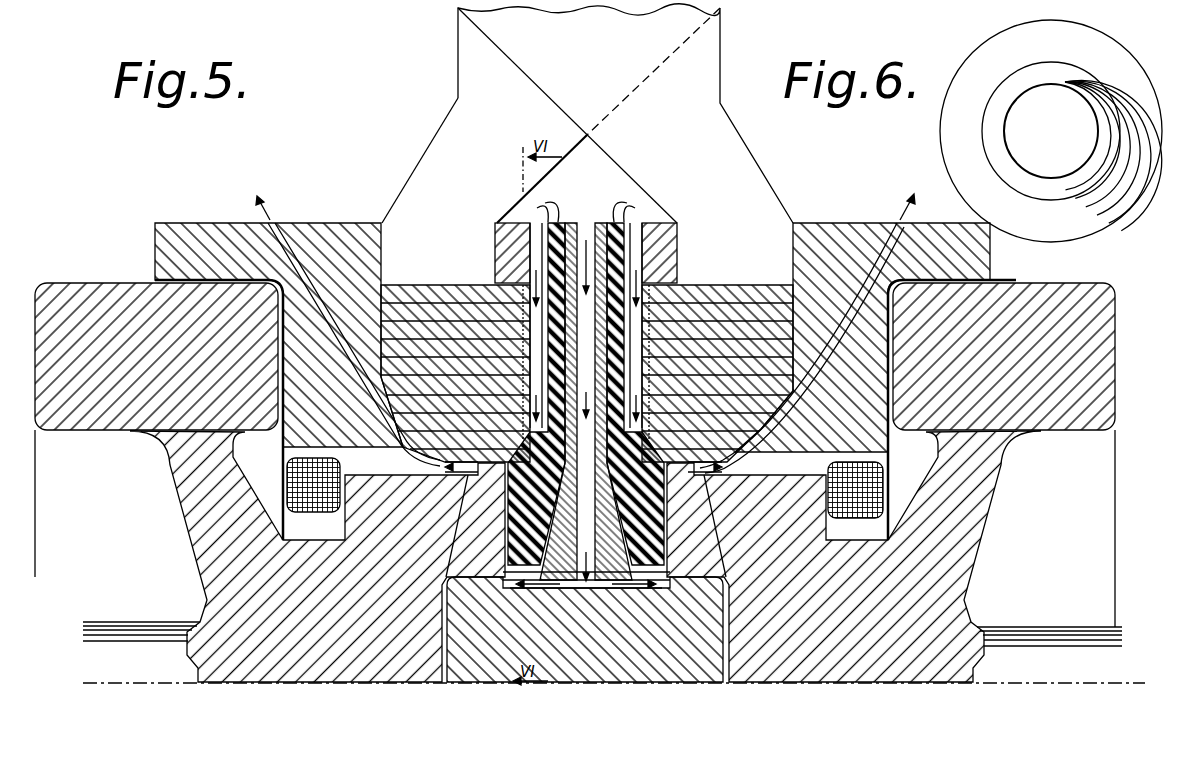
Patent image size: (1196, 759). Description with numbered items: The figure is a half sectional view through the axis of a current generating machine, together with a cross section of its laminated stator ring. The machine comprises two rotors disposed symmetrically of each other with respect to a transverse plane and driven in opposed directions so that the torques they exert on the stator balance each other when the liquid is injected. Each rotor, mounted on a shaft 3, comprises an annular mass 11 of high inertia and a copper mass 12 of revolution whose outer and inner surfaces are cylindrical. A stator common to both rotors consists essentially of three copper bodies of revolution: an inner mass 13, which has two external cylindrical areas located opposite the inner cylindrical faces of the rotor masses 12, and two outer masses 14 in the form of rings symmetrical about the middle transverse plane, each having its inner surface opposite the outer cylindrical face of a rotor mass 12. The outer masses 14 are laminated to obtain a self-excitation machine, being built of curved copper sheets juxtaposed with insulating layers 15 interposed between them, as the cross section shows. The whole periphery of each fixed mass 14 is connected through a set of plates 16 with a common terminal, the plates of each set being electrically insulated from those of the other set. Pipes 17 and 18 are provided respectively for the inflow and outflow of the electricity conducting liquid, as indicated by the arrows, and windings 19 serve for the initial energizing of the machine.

In FIG. 5, the shaft 3 is at (145, 640).
In FIG. 5, the annular mass 11 is at (101, 312).
In FIG. 5, the mass of revolution 12 is at (443, 478).
In FIG. 5, the inner mass 13 is at (462, 578).
In FIG. 5, the outer mass 14 is at (447, 330).
In FIG. 6, the outer mass 14 is at (1123, 70).
In FIG. 5, the insulating layer 15 is at (738, 302).
In FIG. 6, the insulating layer 15 is at (1124, 93).
In FIG. 5, the plate 16 is at (436, 172).
In FIG. 5, the pipe 17 is at (588, 232).
In FIG. 5, the pipe 18 is at (288, 243).
In FIG. 5, the winding 19 is at (305, 478).